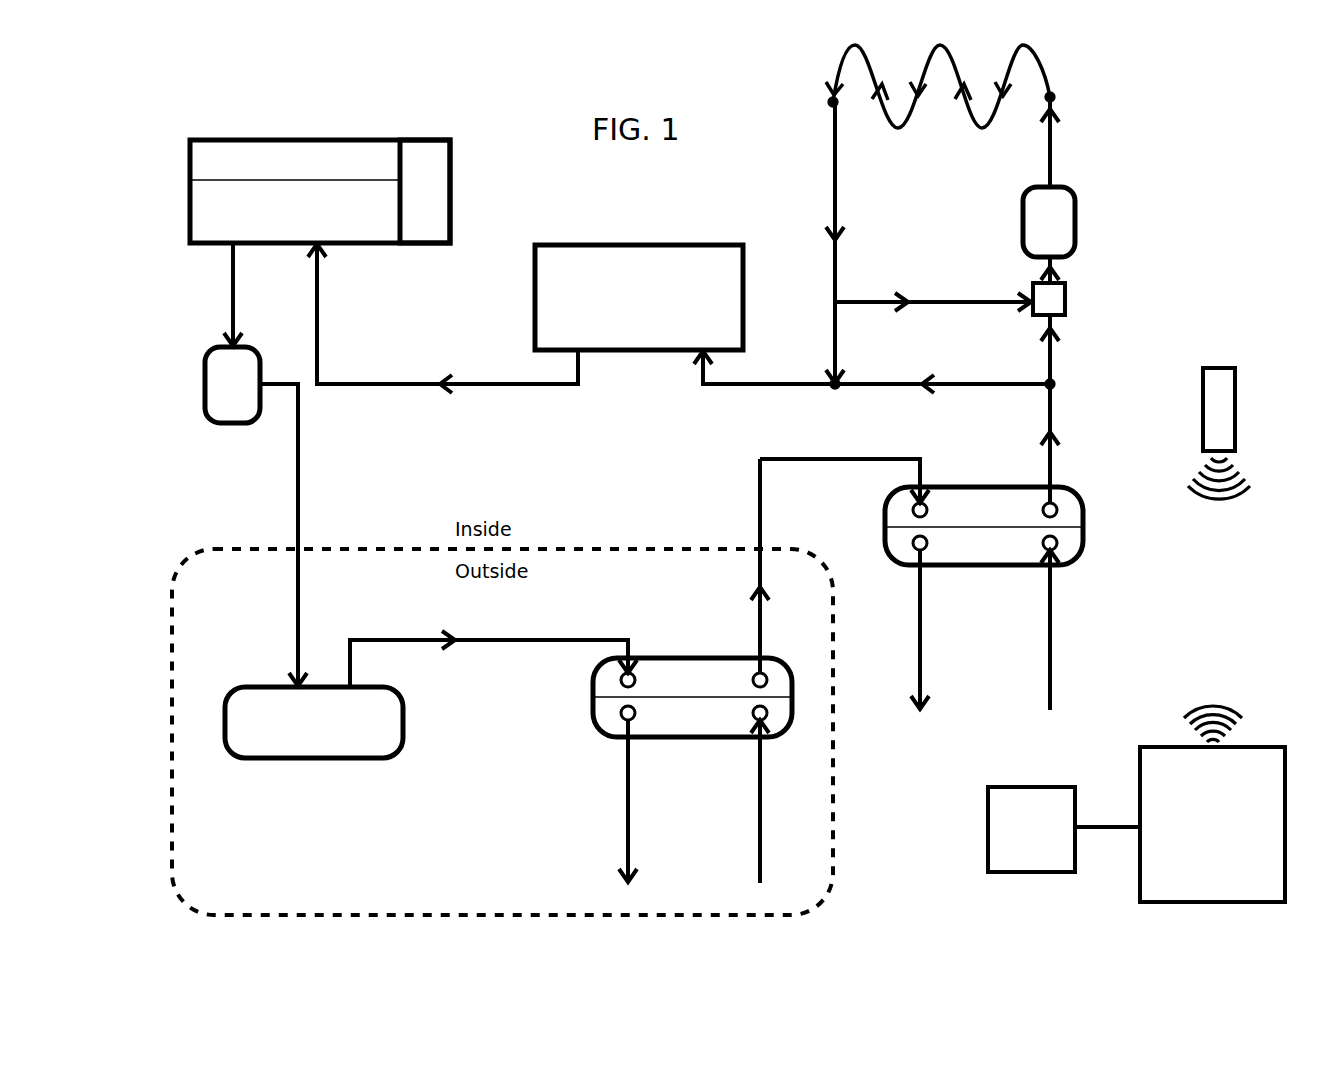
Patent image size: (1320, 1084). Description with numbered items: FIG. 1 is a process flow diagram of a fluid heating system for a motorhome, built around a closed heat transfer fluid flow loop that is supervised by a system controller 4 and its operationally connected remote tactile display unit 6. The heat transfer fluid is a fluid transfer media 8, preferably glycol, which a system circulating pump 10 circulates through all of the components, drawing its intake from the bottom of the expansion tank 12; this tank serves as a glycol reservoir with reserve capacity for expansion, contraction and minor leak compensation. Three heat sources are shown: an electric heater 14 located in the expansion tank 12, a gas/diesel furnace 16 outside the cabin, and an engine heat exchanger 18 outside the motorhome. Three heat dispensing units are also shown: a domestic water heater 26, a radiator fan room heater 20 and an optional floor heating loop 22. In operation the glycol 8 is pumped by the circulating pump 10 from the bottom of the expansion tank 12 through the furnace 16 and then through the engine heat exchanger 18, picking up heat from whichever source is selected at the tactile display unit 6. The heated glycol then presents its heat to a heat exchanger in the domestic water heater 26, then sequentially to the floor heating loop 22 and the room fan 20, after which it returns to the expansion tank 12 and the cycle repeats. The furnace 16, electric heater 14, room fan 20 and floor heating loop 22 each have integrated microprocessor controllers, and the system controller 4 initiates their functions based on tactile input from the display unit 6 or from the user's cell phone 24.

The system controller 4 is at (1207, 903).
The remote tactile display unit 6 is at (1033, 873).
The fluid transfer media 8 is at (352, 228).
The system circulating pump 10 is at (236, 412).
The expansion tank 12 is at (198, 158).
The electric heater 14 is at (442, 195).
The gas/diesel furnace 16 is at (300, 745).
The engine heat exchanger 18 is at (566, 711).
The radiator fan room heater 20 is at (708, 253).
The floor heating loop 22 is at (920, 105).
The cell phone 24 is at (1237, 403).
The domestic water heater 26 is at (985, 555).